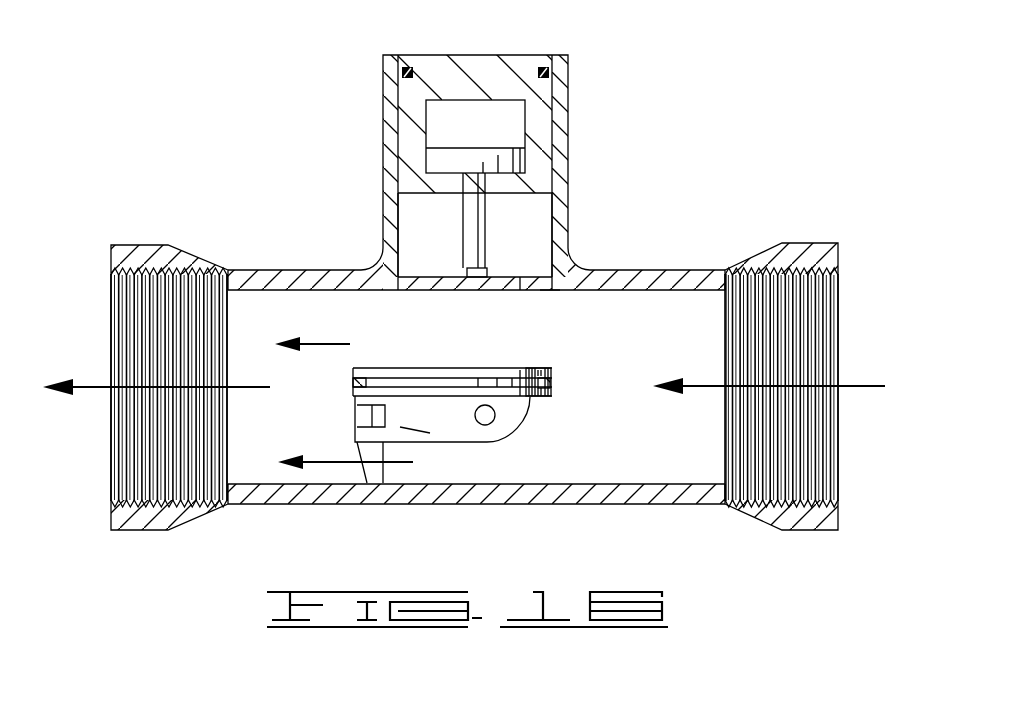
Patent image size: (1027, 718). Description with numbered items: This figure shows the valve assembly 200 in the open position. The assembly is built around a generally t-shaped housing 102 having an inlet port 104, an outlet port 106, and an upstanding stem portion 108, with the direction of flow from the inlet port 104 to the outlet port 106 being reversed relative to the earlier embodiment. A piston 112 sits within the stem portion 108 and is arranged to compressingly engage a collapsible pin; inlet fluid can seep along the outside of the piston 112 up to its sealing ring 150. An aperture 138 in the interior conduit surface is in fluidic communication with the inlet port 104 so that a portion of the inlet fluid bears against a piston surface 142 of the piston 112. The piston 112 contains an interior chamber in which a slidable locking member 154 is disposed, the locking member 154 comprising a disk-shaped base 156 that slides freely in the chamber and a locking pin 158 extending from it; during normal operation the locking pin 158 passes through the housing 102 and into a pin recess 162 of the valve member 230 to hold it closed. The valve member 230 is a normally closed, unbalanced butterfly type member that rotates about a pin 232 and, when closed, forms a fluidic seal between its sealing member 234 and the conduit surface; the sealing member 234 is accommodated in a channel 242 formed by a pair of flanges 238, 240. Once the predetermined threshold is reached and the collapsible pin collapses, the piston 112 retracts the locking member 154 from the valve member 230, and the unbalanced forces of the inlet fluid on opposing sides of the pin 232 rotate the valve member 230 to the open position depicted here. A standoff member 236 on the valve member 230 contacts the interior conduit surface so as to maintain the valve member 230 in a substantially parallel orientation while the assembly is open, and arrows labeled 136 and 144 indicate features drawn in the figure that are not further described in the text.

The valve assembly 200 is at (266, 122).
The housing 102 is at (605, 170).
The inlet port 104 is at (840, 278).
The outlet port 106 is at (113, 268).
The stem portion 108 is at (566, 92).
The piston 112 is at (437, 63).
The fluid flow direction 136 is at (392, 337).
The aperture 138 is at (548, 289).
The piston surface 142 is at (526, 194).
The cavity floor 144 is at (507, 275).
The sealing ring 150 is at (398, 88).
The locking member 154 is at (468, 230).
The base 156 is at (507, 148).
The locking pin 158 is at (473, 260).
The pin recess 162 is at (398, 426).
The valve member 230 is at (501, 364).
The pin 232 is at (492, 418).
The sealing member 234 is at (550, 380).
The standoff member 236 is at (357, 442).
The flange 238 is at (405, 398).
The flange 240 is at (413, 366).
The channel 242 is at (517, 375).